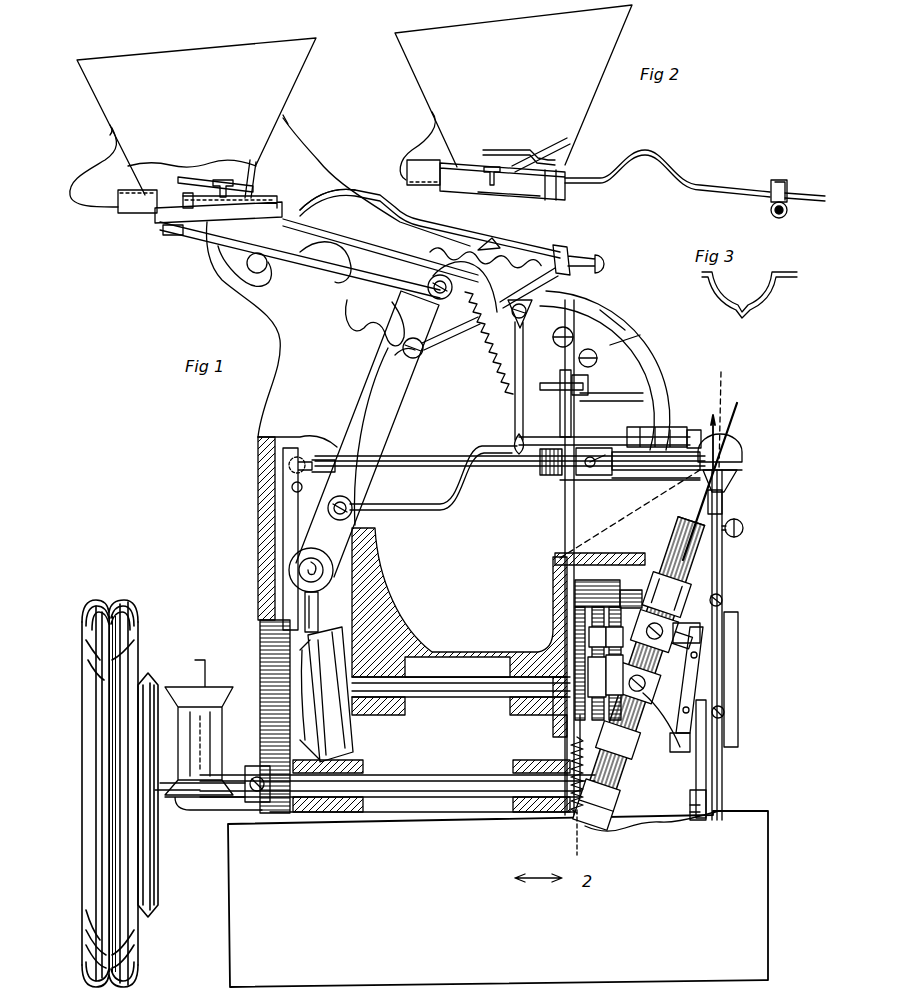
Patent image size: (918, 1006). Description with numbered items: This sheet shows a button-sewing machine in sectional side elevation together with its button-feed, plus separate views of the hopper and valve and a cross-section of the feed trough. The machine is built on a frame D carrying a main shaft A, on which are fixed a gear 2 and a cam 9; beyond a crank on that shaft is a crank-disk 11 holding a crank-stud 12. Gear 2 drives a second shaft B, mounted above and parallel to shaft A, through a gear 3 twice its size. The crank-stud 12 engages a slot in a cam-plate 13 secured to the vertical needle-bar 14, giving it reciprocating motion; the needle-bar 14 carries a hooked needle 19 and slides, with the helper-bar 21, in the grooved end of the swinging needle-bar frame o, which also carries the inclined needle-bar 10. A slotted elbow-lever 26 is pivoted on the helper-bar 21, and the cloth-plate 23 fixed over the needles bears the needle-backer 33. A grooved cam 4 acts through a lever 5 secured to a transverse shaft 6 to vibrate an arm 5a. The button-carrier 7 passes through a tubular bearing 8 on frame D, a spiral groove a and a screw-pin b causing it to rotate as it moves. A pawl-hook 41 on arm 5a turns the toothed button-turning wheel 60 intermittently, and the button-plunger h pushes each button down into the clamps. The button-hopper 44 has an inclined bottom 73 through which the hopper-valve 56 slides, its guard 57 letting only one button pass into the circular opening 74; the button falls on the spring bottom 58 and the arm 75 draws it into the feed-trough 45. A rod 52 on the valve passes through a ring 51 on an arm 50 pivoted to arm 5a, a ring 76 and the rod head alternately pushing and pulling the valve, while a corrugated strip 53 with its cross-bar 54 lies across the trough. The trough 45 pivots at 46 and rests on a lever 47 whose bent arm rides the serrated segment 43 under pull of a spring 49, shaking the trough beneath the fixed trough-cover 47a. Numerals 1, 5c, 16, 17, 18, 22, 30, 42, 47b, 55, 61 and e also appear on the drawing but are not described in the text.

In FIG. 1, the frame upright 1 is at (725, 411).
In FIG. 1, the gear 2 is at (262, 764).
In FIG. 1, the gear 3 is at (260, 650).
In FIG. 1, the grooved cam 4 is at (325, 694).
In FIG. 1, the lever 5 is at (309, 533).
In FIG. 1, the arm 5a is at (388, 426).
In FIG. 1, the pin 5c is at (303, 612).
In FIG. 1, the transverse shaft 6 is at (320, 544).
In FIG. 1, the carrier 7 is at (510, 450).
In FIG. 1, the tubular bearing 8 is at (540, 470).
In FIG. 1, the cam 9 is at (592, 821).
In FIG. 1, the inclined needle-bar 10 is at (627, 686).
In FIG. 1, the crank-disk 11 is at (696, 816).
In FIG. 1, the crank-stud 12 is at (708, 758).
In FIG. 1, the cam-plate 13 is at (710, 712).
In FIG. 1, the vertical needle-bar 14 is at (724, 558).
In FIG. 1, the collar 16 is at (643, 611).
In FIG. 1, the gear cluster 17 is at (619, 644).
In FIG. 1, the inclined rod 18 is at (730, 432).
In FIG. 1, the hooked needle 19 is at (704, 432).
In FIG. 1, the helper-bar 21 is at (726, 503).
In FIG. 1, the plate 22 is at (742, 480).
In FIG. 1, the cloth-plate 23 is at (745, 456).
In FIG. 1, the slotted elbow-lever 26 is at (739, 637).
In FIG. 1, the screw 30 is at (722, 600).
In FIG. 1, the needle-backer 33 is at (692, 478).
In FIG. 1, the pawl-hook 41 is at (480, 452).
In FIG. 1, the vertical rod 42 is at (514, 396).
In FIG. 1, the serrated segment 43 is at (388, 336).
In FIG. 1, the button-hopper 44 is at (196, 116).
In FIG. 2, the button-hopper 44 is at (513, 86).
In FIG. 1, the feed-trough 45 is at (536, 288).
In FIG. 1, the pivot 46 is at (575, 347).
In FIG. 1, the lever 47 is at (262, 280).
In FIG. 1, the trough-cover 47a is at (645, 354).
In FIG. 3, the channel 47b is at (749, 296).
In FIG. 1, the spring 49 is at (561, 397).
In FIG. 1, the arm 50 is at (572, 280).
In FIG. 2, the arm 50 is at (788, 211).
In FIG. 1, the ring 51 is at (562, 248).
In FIG. 2, the ring 51 is at (790, 178).
In FIG. 1, the rod 52 is at (410, 222).
In FIG. 2, the rod 52 is at (695, 170).
In FIG. 1, the flexible corrugated strip 53 is at (412, 243).
In FIG. 1, the cross-bar 54 is at (319, 258).
In FIG. 1, the wire 55 is at (327, 205).
In FIG. 1, the hopper-valve 56 is at (189, 212).
In FIG. 2, the hopper-valve 56 is at (423, 172).
In FIG. 1, the hopper-valve guard 57 is at (215, 185).
In FIG. 2, the hopper-valve guard 57 is at (519, 148).
In FIG. 1, the spring hopper-valve bottom 58 is at (87, 166).
In FIG. 2, the spring hopper-valve bottom 58 is at (403, 146).
In FIG. 1, the button-turning wheel 60 is at (633, 420).
In FIG. 1, the spring 61 is at (485, 266).
In FIG. 1, the inclined bottom 73 is at (235, 170).
In FIG. 2, the inclined bottom 73 is at (565, 140).
In FIG. 2, the circular opening 74 is at (486, 164).
In FIG. 2, the arm 75 is at (500, 184).
In FIG. 1, the ring 76 is at (494, 246).
In FIG. 2, the ring 76 is at (770, 180).
In FIG. 1, the shaft A is at (397, 773).
In FIG. 1, the second shaft B is at (461, 700).
In FIG. 1, the frame D is at (258, 512).
In FIG. 1, the spiral groove a is at (620, 474).
In FIG. 1, the screw-pin b is at (630, 490).
In FIG. 1, the link e is at (636, 693).
In FIG. 1, the button-plunger h is at (550, 722).
In FIG. 1, the swinging needle-bar frame o is at (722, 770).